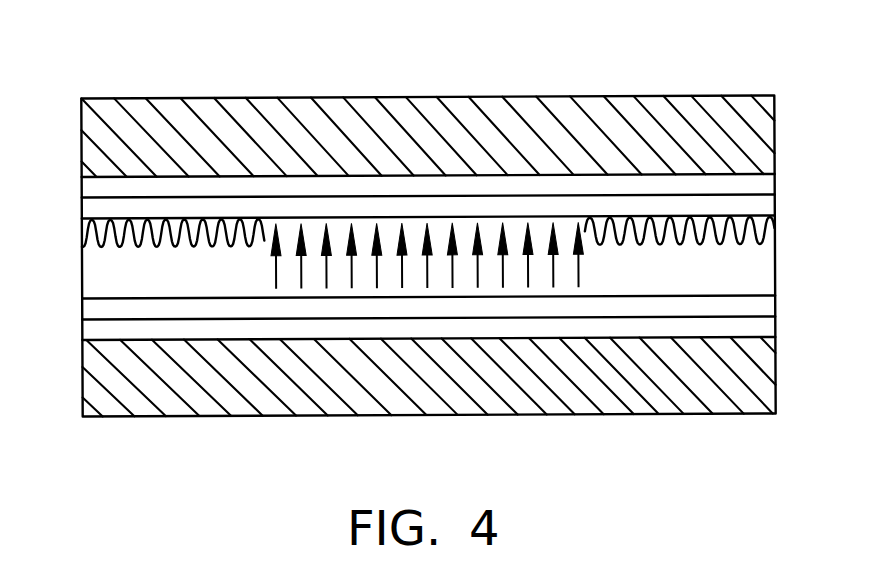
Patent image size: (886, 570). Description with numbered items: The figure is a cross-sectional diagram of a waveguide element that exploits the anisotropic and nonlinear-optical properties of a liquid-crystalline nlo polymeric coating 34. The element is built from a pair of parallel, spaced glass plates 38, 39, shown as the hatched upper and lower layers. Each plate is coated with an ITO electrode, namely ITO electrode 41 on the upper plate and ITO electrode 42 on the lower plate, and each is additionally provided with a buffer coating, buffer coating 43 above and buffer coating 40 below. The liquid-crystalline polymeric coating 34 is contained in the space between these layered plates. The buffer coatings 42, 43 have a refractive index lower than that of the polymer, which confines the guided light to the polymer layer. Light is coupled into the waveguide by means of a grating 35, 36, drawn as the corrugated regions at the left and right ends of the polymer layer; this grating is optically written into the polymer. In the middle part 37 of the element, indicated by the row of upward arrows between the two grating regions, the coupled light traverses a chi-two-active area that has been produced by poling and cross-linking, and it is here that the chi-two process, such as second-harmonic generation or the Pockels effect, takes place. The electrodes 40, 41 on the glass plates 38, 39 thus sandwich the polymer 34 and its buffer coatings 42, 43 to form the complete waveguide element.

The liquid-crystalline nlo polymeric coating 34 is at (747, 276).
The grating 35 is at (107, 218).
The grating 36 is at (630, 223).
The middle part 37 is at (327, 237).
The glass plate 38 is at (206, 405).
The glass plate 39 is at (129, 105).
The ITO electrode 40 is at (423, 330).
The ITO electrode 41 is at (447, 190).
The buffer coating 42 is at (642, 308).
The buffer coating 43 is at (540, 205).